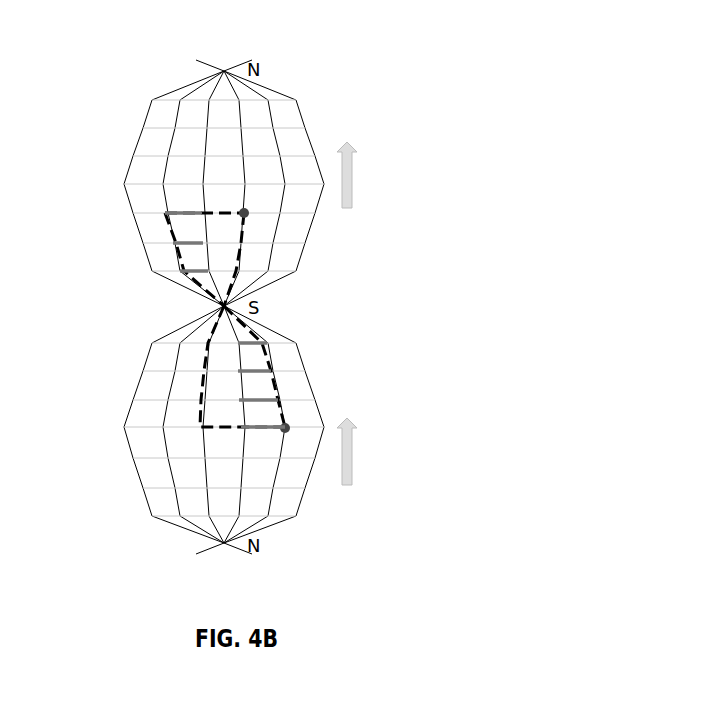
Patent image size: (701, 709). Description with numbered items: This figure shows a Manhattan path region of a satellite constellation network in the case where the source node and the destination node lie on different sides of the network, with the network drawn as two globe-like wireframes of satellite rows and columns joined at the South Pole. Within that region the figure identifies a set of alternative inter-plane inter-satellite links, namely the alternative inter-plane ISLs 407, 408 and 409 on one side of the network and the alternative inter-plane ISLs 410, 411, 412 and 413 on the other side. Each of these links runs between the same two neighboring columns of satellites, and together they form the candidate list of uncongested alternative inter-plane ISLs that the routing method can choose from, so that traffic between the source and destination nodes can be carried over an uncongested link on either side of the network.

The alternative inter-plane ISL 407 is at (189, 217).
The alternative inter-plane ISL 408 is at (189, 246).
The alternative inter-plane ISL 409 is at (189, 274).
The alternative inter-plane ISL 410 is at (254, 341).
The alternative inter-plane ISL 411 is at (253, 369).
The alternative inter-plane ISL 412 is at (253, 398).
The alternative inter-plane ISL 413 is at (270, 425).